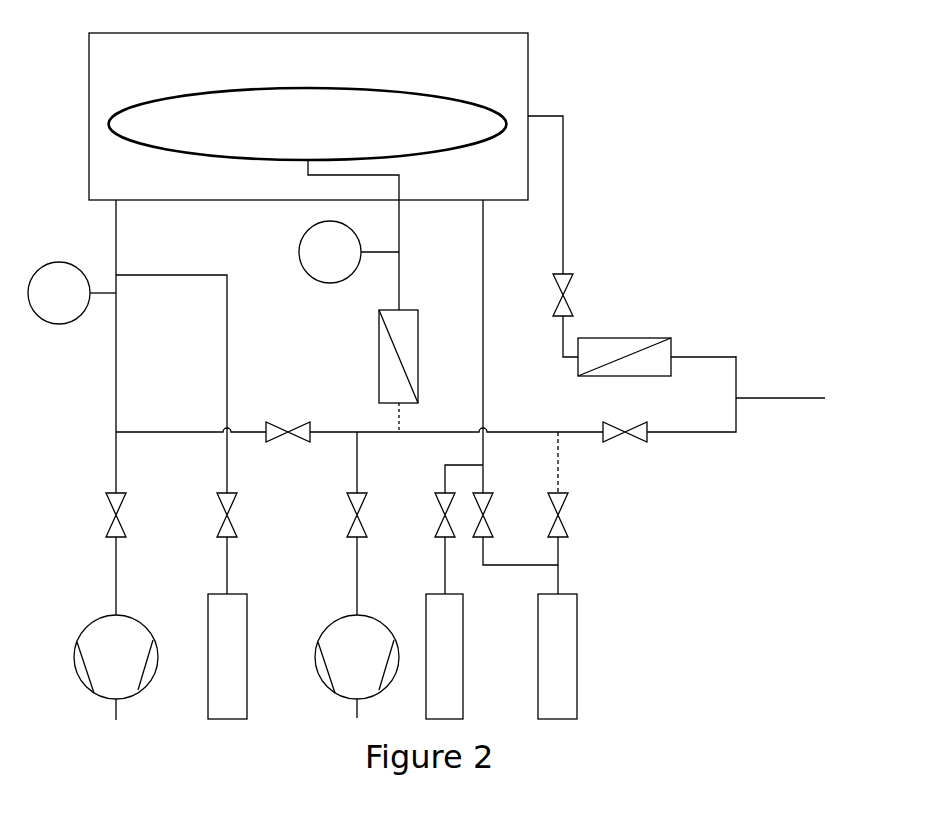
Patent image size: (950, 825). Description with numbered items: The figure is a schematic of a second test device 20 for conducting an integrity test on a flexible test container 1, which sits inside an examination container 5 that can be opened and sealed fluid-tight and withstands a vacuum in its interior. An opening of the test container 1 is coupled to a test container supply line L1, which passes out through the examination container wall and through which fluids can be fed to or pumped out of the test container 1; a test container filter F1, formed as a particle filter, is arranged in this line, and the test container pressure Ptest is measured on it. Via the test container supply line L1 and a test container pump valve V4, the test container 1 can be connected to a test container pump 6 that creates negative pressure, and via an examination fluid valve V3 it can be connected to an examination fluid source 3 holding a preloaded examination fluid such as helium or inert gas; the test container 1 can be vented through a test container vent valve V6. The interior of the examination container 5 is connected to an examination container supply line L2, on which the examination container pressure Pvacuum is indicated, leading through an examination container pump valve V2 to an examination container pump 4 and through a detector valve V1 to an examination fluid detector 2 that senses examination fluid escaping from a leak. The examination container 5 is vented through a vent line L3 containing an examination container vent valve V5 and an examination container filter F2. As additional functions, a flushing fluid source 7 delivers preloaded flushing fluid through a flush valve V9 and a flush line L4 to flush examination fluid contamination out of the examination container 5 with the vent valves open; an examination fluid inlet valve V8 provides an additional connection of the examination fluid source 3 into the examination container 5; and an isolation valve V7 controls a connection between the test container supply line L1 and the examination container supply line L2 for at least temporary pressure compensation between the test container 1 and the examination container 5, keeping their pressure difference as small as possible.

The test container 1 is at (308, 124).
The examination fluid detector 2 is at (227, 628).
The examination fluid source 3 is at (557, 642).
The examination container pump 4 is at (116, 628).
The examination container 5 is at (308, 116).
The test container pump 6 is at (357, 627).
The flushing fluid source 7 is at (444, 628).
The second test device 20 is at (723, 87).
The test container supply line L1 is at (400, 262).
The examination container supply line L2 is at (117, 247).
The vent line L3 is at (563, 192).
The flush line L4 is at (484, 375).
The detector valve V1 is at (233, 515).
The examination container pump valve V2 is at (121, 515).
The examination fluid valve V3 is at (564, 484).
The test container pump valve V4 is at (362, 484).
The examination container vent valve V5 is at (570, 295).
The test container vent valve V6 is at (625, 440).
The isolation valve V7 is at (288, 438).
The examination fluid inlet valve V8 is at (489, 515).
The flush valve V9 is at (459, 501).
The test container filter F1 is at (390, 371).
The examination container filter F2 is at (624, 365).
The test container pressure Ptest is at (349, 252).
The examination container pressure Pvacuum is at (72, 293).